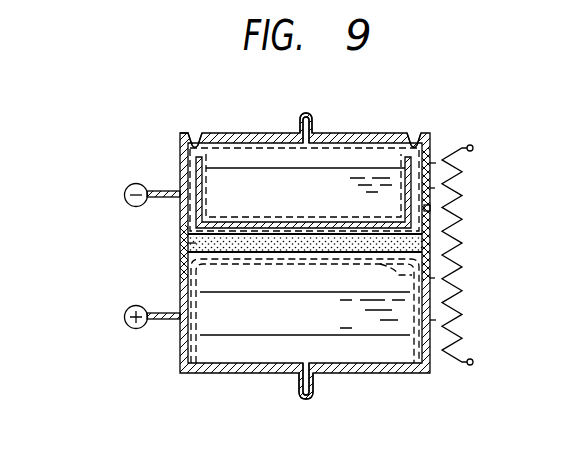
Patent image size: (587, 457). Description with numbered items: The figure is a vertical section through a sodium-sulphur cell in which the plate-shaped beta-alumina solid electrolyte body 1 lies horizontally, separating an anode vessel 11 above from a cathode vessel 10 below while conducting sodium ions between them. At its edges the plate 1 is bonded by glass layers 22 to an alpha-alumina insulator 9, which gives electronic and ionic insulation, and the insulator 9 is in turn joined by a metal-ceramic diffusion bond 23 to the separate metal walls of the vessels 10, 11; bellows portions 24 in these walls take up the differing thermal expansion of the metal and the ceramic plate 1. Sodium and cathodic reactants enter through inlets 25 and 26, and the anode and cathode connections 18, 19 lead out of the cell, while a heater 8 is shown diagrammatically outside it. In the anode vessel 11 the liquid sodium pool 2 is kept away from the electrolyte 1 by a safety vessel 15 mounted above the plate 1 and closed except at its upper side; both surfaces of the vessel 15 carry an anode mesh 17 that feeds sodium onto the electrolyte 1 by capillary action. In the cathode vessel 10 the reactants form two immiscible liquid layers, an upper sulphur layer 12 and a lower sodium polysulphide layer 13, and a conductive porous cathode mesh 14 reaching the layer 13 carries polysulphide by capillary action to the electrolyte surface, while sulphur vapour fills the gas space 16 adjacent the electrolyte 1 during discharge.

The solid electrolyte body 1 is at (182, 240).
The sodium pool 2 is at (333, 183).
The heater 8 is at (447, 243).
The alpha-alumina insulator 9 is at (182, 262).
The cathode vessel 10 is at (182, 357).
The anode vessel 11 is at (182, 158).
The sulphur layer 12 is at (432, 320).
The sodium polysulphide layer 13 is at (402, 355).
The cathode mesh 14 is at (432, 278).
The safety vessel 15 is at (432, 163).
The gas space 16 is at (182, 278).
The anode mesh 17 is at (432, 188).
The anode connection 18 is at (124, 195).
The cathode connection 19 is at (124, 317).
The glass layers 22 is at (182, 248).
The metal-ceramic diffusion bond 23 is at (432, 208).
The bellows portions 24 is at (411, 134).
The sodium inlet 25 is at (312, 118).
The cathodic reactant inlet 26 is at (296, 392).